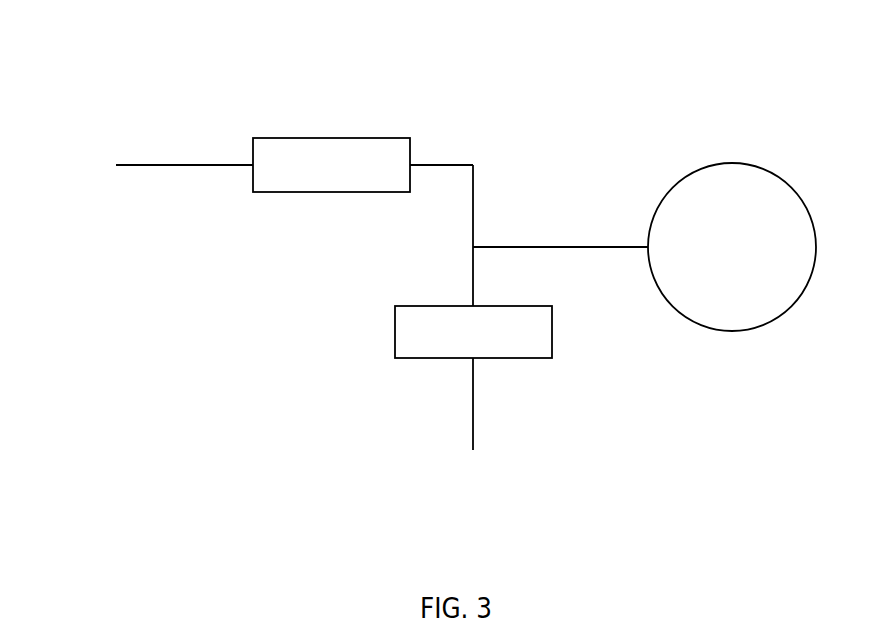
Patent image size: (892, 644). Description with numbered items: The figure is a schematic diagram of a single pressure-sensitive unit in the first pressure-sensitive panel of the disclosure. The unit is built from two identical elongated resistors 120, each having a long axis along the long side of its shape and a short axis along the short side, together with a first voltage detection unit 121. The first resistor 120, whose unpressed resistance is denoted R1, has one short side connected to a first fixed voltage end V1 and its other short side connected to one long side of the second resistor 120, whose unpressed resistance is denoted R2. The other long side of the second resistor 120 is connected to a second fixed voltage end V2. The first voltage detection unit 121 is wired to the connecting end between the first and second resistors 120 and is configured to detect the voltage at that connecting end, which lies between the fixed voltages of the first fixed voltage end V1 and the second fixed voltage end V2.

The resistor 120 is at (364, 193).
The first voltage detection unit 121 is at (732, 247).
The resistance of the first resistor R1 is at (331, 162).
The resistance of the second resistor R2 is at (473, 331).
The first fixed voltage end V1 is at (150, 161).
The second fixed voltage end V2 is at (480, 439).